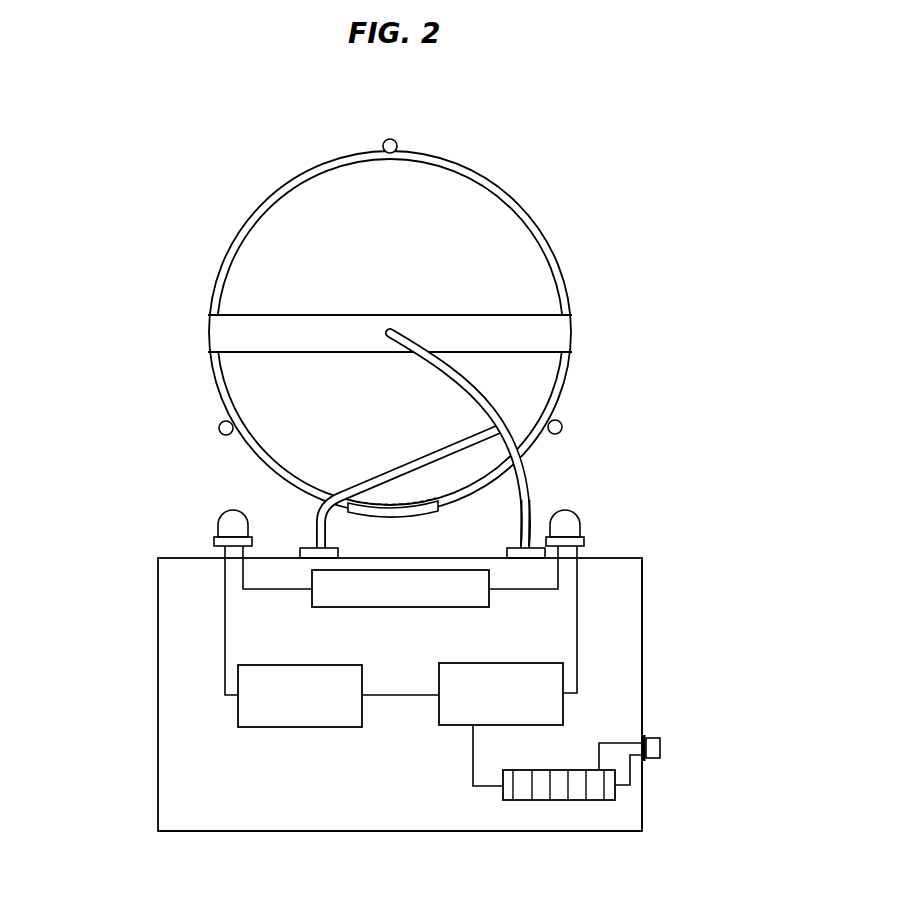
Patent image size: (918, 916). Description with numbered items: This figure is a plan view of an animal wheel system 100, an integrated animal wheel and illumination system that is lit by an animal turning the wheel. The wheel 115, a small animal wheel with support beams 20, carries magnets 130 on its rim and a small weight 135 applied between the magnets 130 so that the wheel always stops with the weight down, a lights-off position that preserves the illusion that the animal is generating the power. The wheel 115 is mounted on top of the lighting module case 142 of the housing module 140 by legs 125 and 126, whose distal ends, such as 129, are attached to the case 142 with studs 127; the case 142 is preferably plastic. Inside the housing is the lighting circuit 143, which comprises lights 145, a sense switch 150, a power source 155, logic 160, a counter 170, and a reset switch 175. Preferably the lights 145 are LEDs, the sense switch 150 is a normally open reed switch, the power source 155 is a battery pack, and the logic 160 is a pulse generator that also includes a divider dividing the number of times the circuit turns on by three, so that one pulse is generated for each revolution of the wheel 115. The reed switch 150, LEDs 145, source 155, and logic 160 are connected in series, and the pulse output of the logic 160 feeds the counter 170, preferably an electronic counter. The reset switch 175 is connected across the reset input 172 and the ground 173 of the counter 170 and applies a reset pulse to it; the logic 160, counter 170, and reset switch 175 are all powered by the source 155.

The animal wheel system 100 is at (153, 163).
The wheel 115 is at (366, 332).
The magnets 130 is at (387, 139).
The support beams 20 is at (310, 322).
The leg 125 is at (529, 480).
The distal end 129 is at (528, 515).
The leg 126 is at (393, 474).
The studs 127 is at (299, 549).
The weight 135 is at (410, 518).
The lights 145 is at (219, 518).
The housing module 140 is at (379, 718).
The lighting module case 142 is at (643, 603).
The lighting circuit 143 is at (253, 803).
The sense switch 150 is at (395, 608).
The power source 155 is at (320, 727).
The logic 160 is at (520, 663).
The counter 170 is at (503, 795).
The reset input 172 is at (598, 758).
The ground 173 is at (620, 800).
The reset switch 175 is at (660, 740).